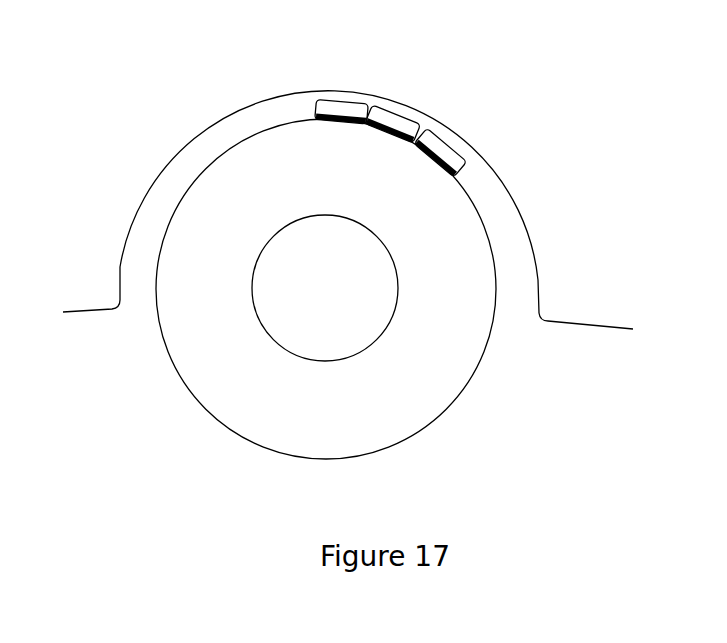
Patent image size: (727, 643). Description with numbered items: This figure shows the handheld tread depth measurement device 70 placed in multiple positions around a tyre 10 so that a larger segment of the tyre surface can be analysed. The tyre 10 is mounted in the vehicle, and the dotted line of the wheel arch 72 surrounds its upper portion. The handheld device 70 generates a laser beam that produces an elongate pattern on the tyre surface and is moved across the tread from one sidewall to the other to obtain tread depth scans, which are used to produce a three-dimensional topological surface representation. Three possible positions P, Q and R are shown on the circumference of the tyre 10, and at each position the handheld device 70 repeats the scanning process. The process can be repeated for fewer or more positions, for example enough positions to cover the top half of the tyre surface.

The tyre 10 is at (435, 370).
The wheel arch 72 is at (140, 212).
The handheld tread depth measurement device 70 is at (382, 126).
The first position P is at (338, 125).
The second position Q is at (385, 132).
The third position R is at (435, 162).